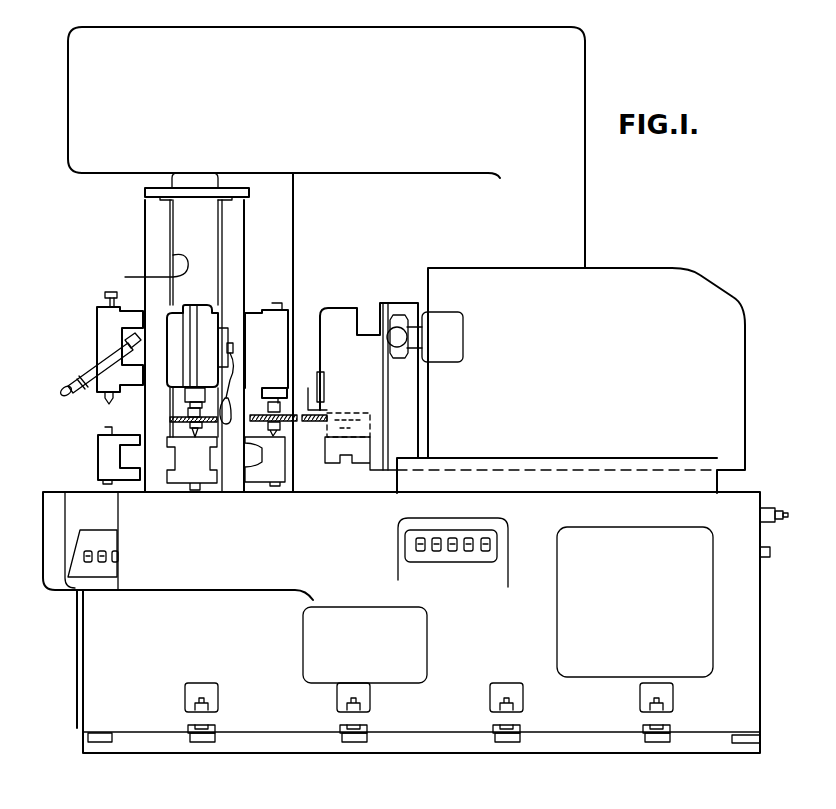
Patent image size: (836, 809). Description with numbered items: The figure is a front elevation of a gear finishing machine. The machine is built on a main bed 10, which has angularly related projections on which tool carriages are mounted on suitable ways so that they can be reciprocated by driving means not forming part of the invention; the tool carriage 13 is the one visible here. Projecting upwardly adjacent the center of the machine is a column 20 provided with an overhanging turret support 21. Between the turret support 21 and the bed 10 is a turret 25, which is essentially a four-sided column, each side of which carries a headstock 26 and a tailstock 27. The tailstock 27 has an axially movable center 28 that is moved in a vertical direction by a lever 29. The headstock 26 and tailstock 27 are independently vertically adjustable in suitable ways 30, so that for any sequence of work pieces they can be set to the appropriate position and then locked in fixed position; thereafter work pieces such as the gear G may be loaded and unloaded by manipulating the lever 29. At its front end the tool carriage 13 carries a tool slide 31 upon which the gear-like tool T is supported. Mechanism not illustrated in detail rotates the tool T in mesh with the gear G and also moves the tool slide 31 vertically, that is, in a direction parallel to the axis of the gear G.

The main bed 10 is at (85, 664).
The tool carriage 13 is at (660, 282).
The column 20 is at (575, 200).
The turret support 21 is at (85, 125).
The turret 25 is at (145, 236).
The headstock 26 is at (105, 455).
The tailstock 27 is at (113, 320).
The center 28 is at (100, 400).
The lever 29 is at (90, 368).
The ways 30 is at (165, 339).
The tool slide 31 is at (342, 306).
The gear G is at (184, 408).
The tool T is at (324, 386).